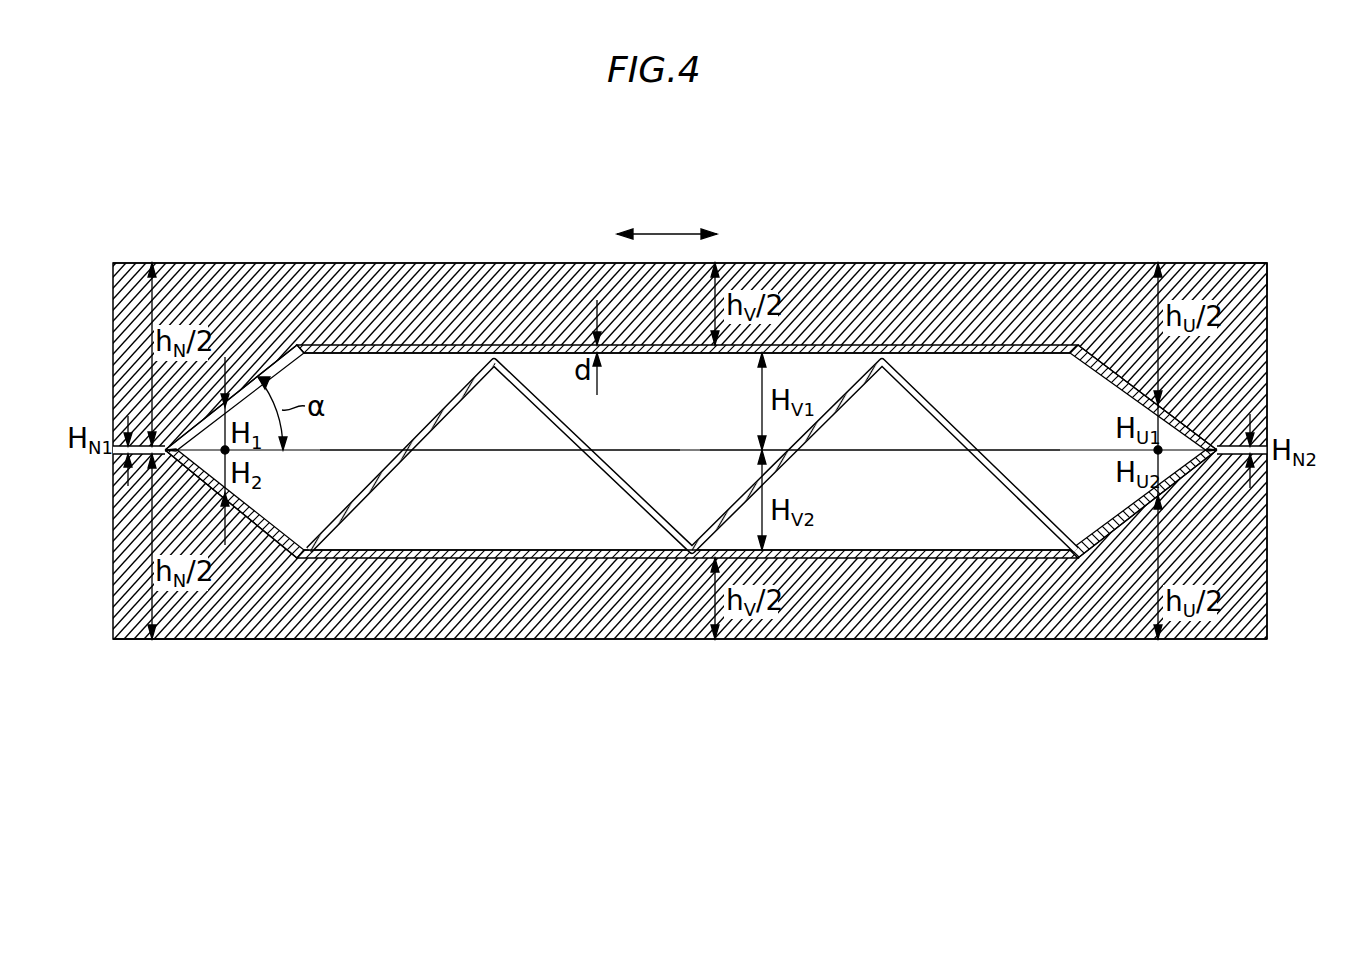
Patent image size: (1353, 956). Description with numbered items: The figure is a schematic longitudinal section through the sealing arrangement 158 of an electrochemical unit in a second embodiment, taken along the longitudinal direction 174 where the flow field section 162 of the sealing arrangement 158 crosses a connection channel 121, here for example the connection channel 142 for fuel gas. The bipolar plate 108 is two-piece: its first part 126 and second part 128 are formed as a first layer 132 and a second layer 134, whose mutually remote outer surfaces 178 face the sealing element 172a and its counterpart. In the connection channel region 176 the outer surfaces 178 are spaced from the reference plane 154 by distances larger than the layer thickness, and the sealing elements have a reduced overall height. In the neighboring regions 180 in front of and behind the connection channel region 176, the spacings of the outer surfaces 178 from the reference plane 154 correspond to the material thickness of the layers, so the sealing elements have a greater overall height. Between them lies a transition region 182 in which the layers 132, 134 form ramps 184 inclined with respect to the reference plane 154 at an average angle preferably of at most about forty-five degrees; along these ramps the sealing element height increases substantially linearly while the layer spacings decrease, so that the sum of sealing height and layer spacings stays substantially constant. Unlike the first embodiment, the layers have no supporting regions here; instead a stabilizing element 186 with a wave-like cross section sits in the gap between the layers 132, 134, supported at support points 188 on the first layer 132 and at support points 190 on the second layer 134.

The bipolar plate 108 is at (290, 560).
The connection channel 121 is at (518, 503).
The first part 126 is at (333, 345).
The second part 128 is at (470, 558).
The first layer 132 is at (430, 350).
The second layer 134 is at (550, 556).
The connection channel for fuel gas 142 is at (898, 503).
The reference plane 154 is at (1042, 450).
The sealing arrangement 158 is at (1218, 262).
The flow field section 162 is at (1265, 262).
The sealing element 172a is at (804, 300).
The longitudinal direction 174 is at (667, 232).
The connection channel region 176 is at (372, 262).
The outer surfaces 178 is at (990, 345).
The neighboring regions 180 is at (121, 262).
The transition region 182 is at (205, 262).
The ramps 184 is at (265, 377).
The stabilizing element 186 is at (380, 490).
The support points 188 is at (497, 355).
The support points 190 is at (312, 556).